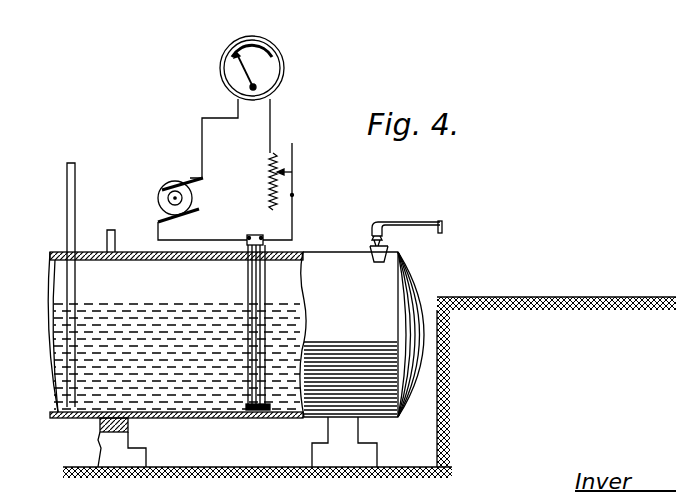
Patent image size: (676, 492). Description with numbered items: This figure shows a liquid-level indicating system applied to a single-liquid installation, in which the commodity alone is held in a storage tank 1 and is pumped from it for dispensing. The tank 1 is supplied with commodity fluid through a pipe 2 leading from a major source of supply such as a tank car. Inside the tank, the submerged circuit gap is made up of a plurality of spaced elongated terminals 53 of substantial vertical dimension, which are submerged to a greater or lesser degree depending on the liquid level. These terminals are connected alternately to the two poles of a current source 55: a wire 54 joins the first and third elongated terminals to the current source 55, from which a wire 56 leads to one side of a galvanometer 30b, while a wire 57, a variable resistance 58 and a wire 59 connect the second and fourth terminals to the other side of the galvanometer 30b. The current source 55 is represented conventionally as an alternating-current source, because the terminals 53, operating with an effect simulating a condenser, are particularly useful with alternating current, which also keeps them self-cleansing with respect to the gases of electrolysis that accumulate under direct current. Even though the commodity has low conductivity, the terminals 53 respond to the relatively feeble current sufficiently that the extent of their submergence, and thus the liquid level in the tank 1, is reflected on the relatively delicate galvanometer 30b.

The storage tank 1 is at (212, 420).
The pipe 2 is at (435, 235).
The galvanometer 30b is at (226, 73).
The elongated terminals 53 is at (268, 250).
The wire 54 is at (200, 240).
The current source 55 is at (192, 198).
The wire 56 is at (202, 136).
The wire 57 is at (293, 207).
The variable resistance 58 is at (271, 165).
The wire 59 is at (272, 118).